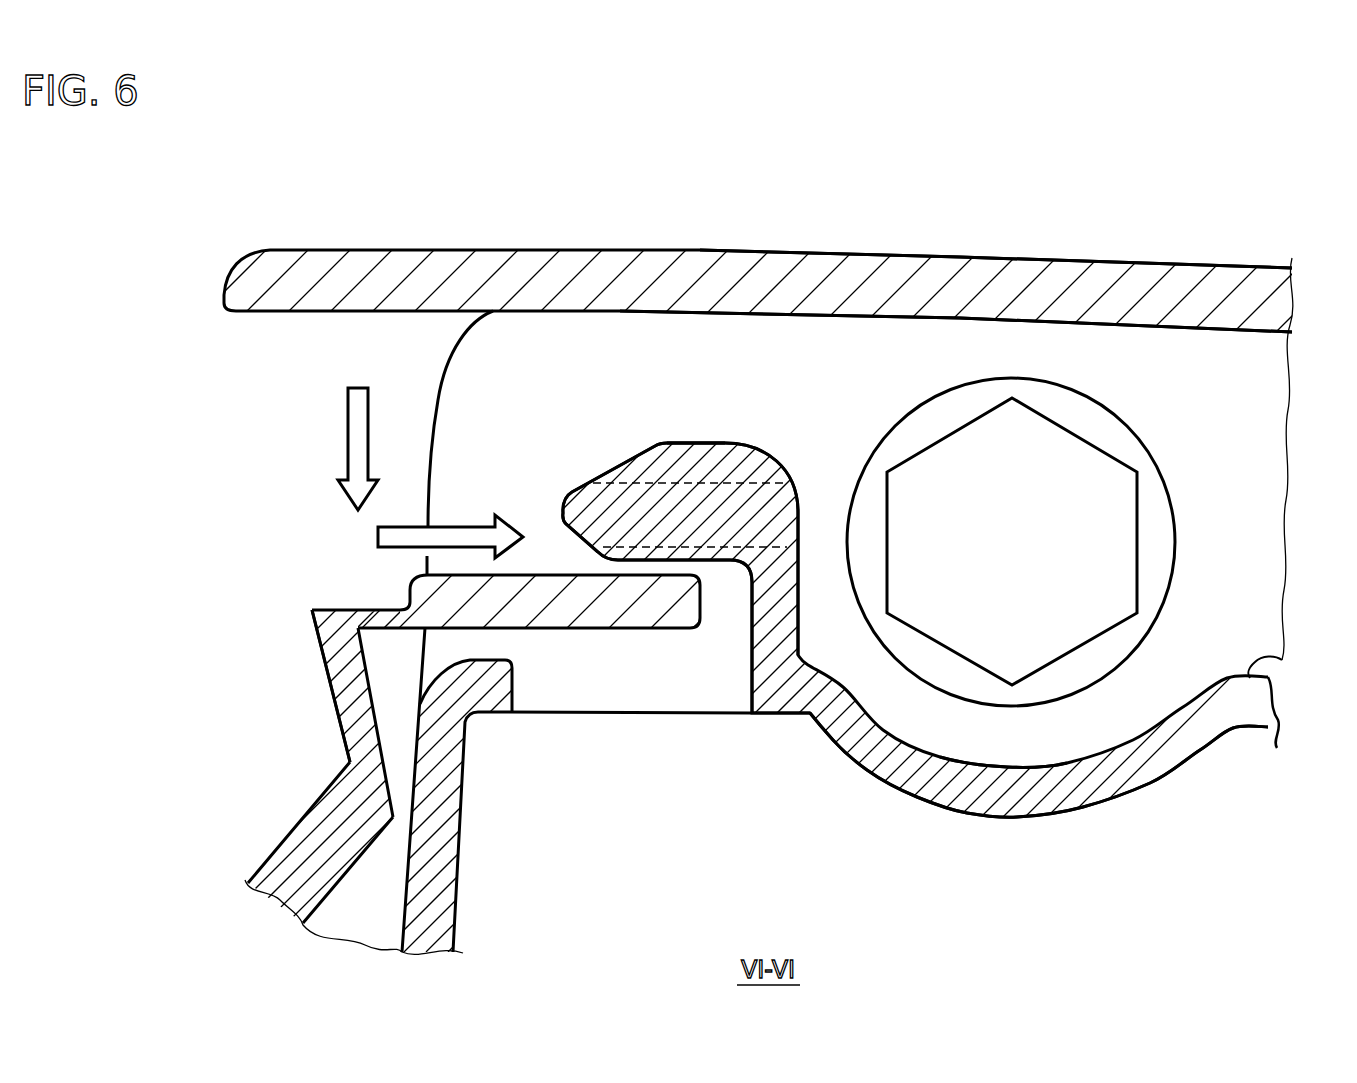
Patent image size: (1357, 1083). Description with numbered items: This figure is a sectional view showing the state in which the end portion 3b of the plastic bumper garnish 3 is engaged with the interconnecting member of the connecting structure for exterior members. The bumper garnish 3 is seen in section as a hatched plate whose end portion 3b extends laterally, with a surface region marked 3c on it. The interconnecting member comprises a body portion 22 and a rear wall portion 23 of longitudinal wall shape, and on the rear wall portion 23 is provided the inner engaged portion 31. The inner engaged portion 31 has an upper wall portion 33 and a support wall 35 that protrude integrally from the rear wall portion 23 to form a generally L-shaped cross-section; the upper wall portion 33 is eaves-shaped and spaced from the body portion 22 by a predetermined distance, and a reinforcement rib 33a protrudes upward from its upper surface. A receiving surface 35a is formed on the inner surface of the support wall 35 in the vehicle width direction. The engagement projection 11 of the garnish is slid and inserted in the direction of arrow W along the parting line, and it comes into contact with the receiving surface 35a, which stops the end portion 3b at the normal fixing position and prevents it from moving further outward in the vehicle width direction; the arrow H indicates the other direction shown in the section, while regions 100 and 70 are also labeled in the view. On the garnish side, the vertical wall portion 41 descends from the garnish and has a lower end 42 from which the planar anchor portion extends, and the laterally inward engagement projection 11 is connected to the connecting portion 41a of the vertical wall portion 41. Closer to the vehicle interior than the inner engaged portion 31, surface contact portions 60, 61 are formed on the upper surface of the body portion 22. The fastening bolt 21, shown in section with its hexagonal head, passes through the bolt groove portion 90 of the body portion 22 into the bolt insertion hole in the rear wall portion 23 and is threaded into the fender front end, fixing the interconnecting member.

The bumper garnish 3 is at (1192, 258).
The end portion 3b is at (1063, 278).
The upper surface of housing 3c is at (878, 252).
The inner engaged portion 31 is at (762, 210).
The upper wall portion 33 is at (560, 512).
The reinforcement rib 33a is at (700, 445).
The support wall 35 is at (799, 548).
The receiving surface 35a is at (745, 603).
The fastening bolt 21 is at (1085, 538).
The body portion 22 is at (1153, 790).
The rear wall portion 23 is at (1233, 553).
The surface contact portion 61 is at (1278, 661).
The bolt groove portion 90 is at (1030, 785).
The engagement projection 11 is at (678, 612).
The gap 100 is at (613, 660).
The vertical wall portion 41 is at (313, 645).
The connecting portion 41a is at (322, 690).
The lower end 42 is at (348, 765).
The surface contact portion 60 is at (493, 660).
The projection 70 is at (505, 700).
The height direction H is at (348, 437).
The arrow W direction W is at (462, 527).